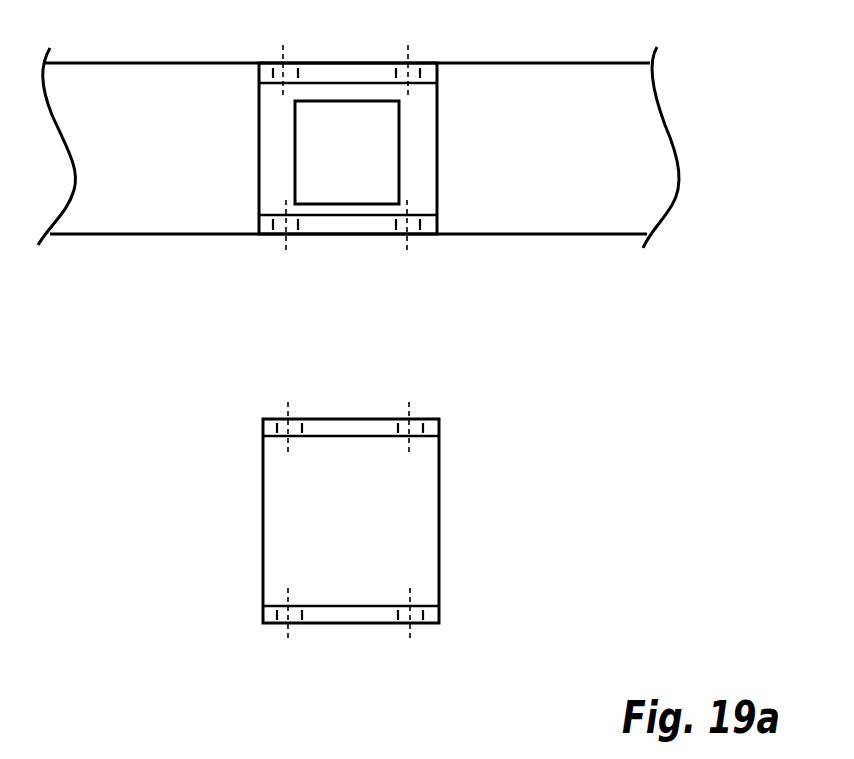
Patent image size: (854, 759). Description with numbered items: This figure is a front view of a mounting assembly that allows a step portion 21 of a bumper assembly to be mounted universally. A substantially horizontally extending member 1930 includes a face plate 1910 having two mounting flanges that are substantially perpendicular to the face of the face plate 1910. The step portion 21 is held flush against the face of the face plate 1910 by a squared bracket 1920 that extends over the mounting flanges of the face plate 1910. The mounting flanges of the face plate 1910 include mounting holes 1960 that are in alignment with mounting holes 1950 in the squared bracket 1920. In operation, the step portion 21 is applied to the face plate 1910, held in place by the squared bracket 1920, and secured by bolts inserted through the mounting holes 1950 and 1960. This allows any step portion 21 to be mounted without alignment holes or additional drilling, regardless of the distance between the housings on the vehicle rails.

The step portion 21 is at (550, 63).
The face plate 1910 is at (258, 218).
The squared bracket 1920 is at (440, 510).
The horizontally extending member 1930 is at (375, 147).
The mounting holes 1950 is at (281, 418).
The mounting holes 1960 is at (465, 263).